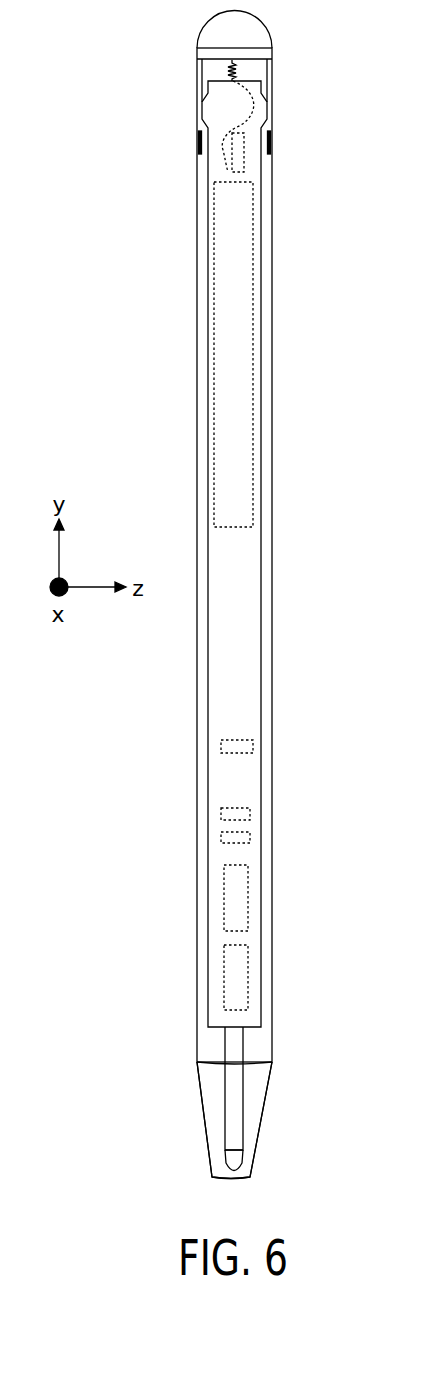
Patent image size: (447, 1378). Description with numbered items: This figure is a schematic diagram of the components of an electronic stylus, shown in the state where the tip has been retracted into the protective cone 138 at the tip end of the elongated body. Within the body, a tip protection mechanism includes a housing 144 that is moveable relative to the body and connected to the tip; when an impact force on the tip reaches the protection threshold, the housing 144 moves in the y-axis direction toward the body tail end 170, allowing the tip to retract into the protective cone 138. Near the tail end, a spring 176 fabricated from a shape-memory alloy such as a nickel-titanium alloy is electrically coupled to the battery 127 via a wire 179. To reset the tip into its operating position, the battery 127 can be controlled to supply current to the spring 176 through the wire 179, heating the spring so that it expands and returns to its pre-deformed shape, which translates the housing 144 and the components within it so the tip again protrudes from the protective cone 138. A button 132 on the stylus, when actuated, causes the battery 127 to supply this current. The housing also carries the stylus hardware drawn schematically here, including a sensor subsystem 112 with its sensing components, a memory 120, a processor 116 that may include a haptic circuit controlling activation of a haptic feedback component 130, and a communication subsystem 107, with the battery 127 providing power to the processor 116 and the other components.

The body tail end 170 is at (290, 53).
The spring 176 is at (232, 65).
The wire 179 is at (253, 112).
The sensor subsystem 112 is at (244, 157).
The battery 127 is at (220, 465).
The housing 144 is at (262, 626).
The button 132 is at (227, 744).
The memory 120 is at (226, 814).
The processor 116 is at (226, 838).
The communication subsystem 107 is at (232, 909).
The haptic feedback component 130 is at (232, 976).
The protective cone 138 is at (263, 1110).